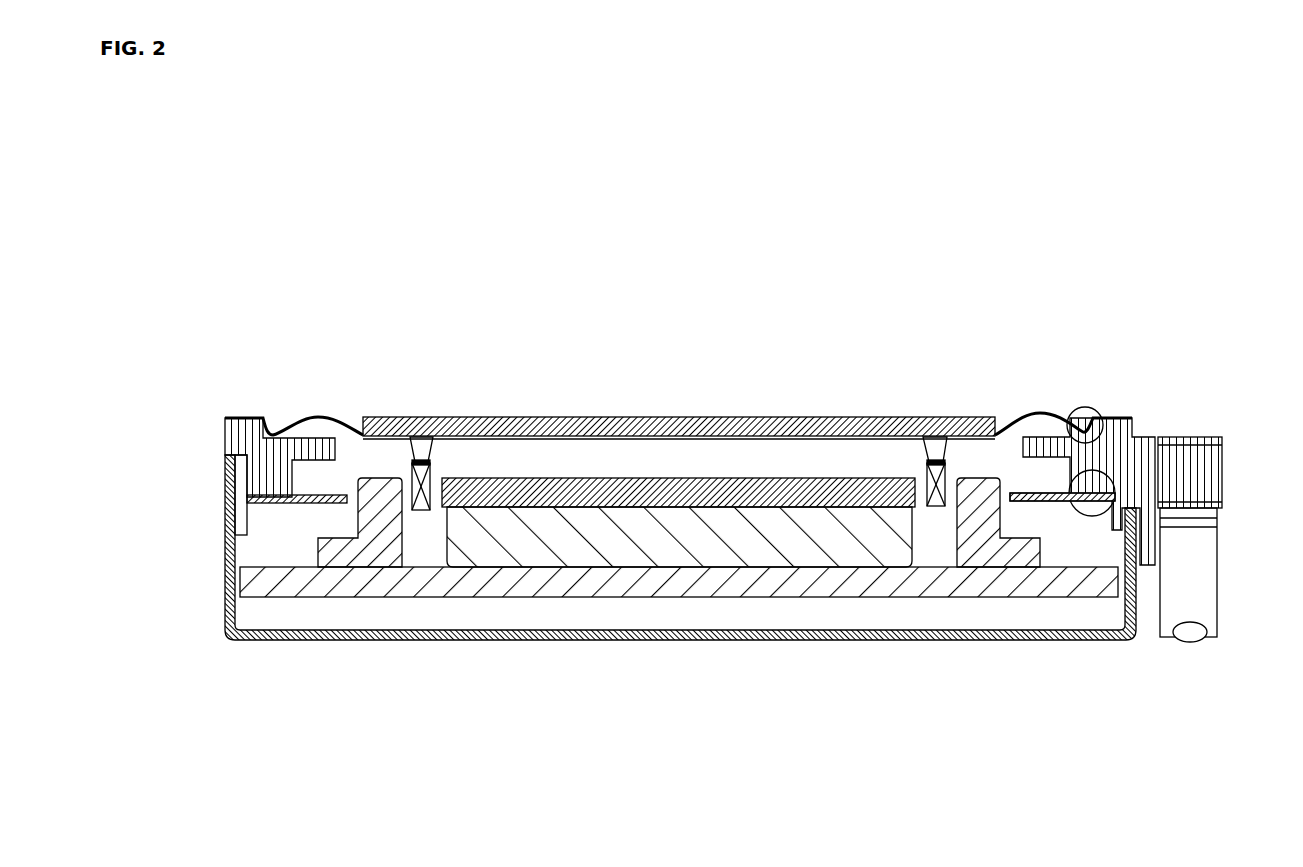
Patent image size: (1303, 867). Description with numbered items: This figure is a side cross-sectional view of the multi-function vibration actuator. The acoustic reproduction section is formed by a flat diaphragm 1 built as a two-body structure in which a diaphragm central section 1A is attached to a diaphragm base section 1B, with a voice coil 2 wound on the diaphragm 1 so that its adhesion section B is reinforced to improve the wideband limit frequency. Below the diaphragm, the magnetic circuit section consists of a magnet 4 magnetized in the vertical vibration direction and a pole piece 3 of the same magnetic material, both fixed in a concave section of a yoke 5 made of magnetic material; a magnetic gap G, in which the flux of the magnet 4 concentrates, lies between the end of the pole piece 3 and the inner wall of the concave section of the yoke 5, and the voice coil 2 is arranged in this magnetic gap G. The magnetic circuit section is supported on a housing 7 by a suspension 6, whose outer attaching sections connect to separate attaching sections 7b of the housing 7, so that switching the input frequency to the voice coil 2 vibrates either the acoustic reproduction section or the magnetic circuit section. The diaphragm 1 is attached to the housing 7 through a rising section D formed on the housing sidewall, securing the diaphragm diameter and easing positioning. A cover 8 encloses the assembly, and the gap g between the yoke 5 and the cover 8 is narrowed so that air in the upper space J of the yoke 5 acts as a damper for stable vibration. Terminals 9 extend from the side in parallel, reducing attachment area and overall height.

The diaphragm 1 is at (678, 320).
The diaphragm central section 1A is at (505, 417).
The diaphragm base section 1B is at (562, 303).
The voice coil 2 is at (928, 475).
The pole piece 3 is at (493, 490).
The magnet 4 is at (568, 535).
The yoke 5 is at (640, 580).
The suspension 6 is at (1040, 493).
The housing 7 is at (258, 455).
The attaching section of the housing 7b is at (1102, 513).
The cover 8 is at (258, 640).
The terminal 9 is at (1190, 523).
The adhesion section B is at (950, 417).
The rising section D is at (1088, 417).
The upper space J is at (1075, 535).
The magnetic gap G is at (917, 507).
The gap g is at (1124, 560).